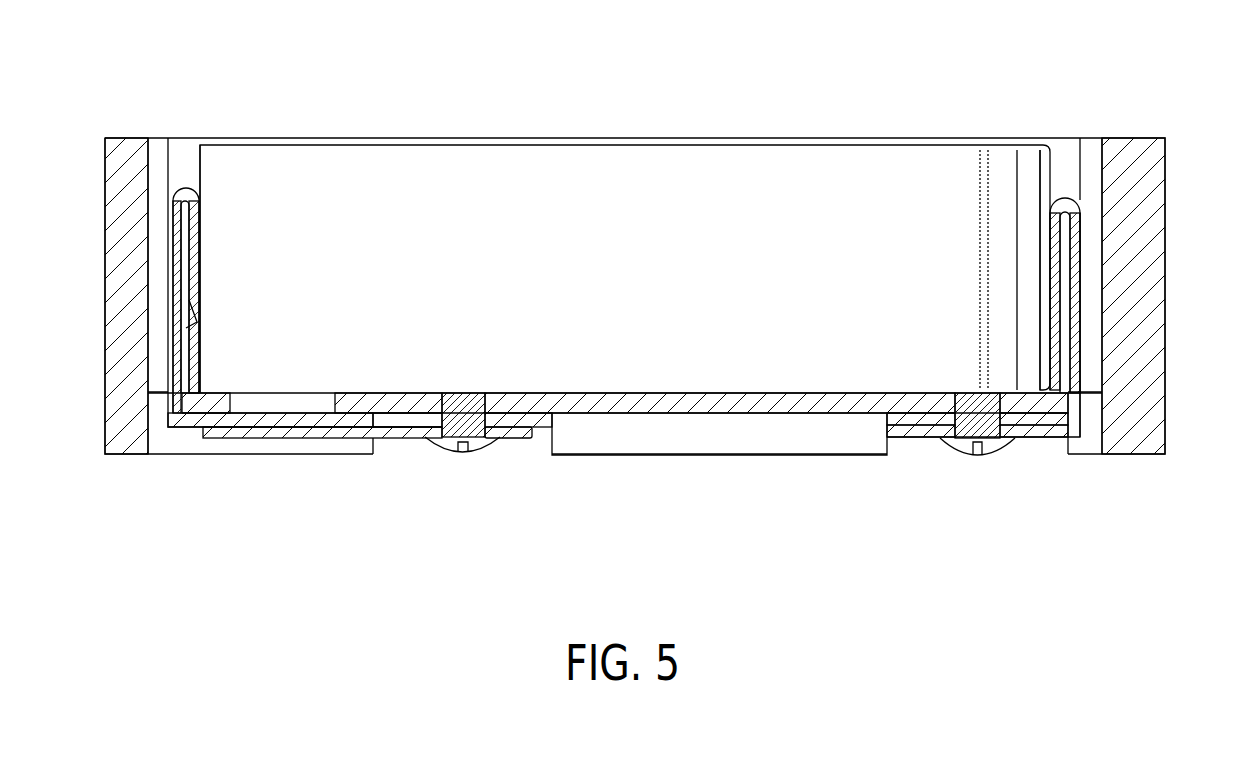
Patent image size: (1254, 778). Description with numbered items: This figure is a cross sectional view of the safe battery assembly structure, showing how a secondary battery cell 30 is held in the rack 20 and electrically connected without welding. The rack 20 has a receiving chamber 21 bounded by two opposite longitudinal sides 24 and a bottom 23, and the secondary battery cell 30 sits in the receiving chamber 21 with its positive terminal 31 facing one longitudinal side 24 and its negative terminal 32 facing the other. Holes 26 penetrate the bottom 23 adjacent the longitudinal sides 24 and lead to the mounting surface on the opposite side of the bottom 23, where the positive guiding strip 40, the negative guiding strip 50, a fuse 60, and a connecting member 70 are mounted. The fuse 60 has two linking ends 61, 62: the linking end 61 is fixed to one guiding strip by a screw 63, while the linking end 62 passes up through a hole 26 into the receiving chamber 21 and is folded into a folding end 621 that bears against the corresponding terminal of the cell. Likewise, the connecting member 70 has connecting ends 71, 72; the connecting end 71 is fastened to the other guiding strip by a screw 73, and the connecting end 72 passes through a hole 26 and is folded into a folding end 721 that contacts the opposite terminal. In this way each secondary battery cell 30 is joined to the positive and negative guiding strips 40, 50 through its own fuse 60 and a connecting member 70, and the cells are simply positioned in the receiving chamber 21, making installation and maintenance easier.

The rack 20 is at (1155, 130).
The receiving chamber 21 is at (1070, 160).
The bottom 23 is at (772, 393).
The longitudinal side 24 is at (103, 170).
The hole 26 is at (166, 430).
The secondary battery cell 30 is at (372, 157).
The positive terminal 31 is at (1030, 165).
The negative terminal 32 is at (213, 190).
The positive guiding strip 40 is at (907, 432).
The negative guiding strip 50 is at (400, 432).
The fuse 60 is at (262, 428).
The linking end 61 is at (505, 437).
The linking end 62 is at (172, 332).
The screw 63 is at (452, 443).
The connecting member 70 is at (1073, 438).
The connecting end 71 is at (1028, 432).
The connecting end 72 is at (1082, 245).
The screw 73 is at (962, 443).
The folding end 621 is at (195, 252).
The folding end 721 is at (1045, 248).